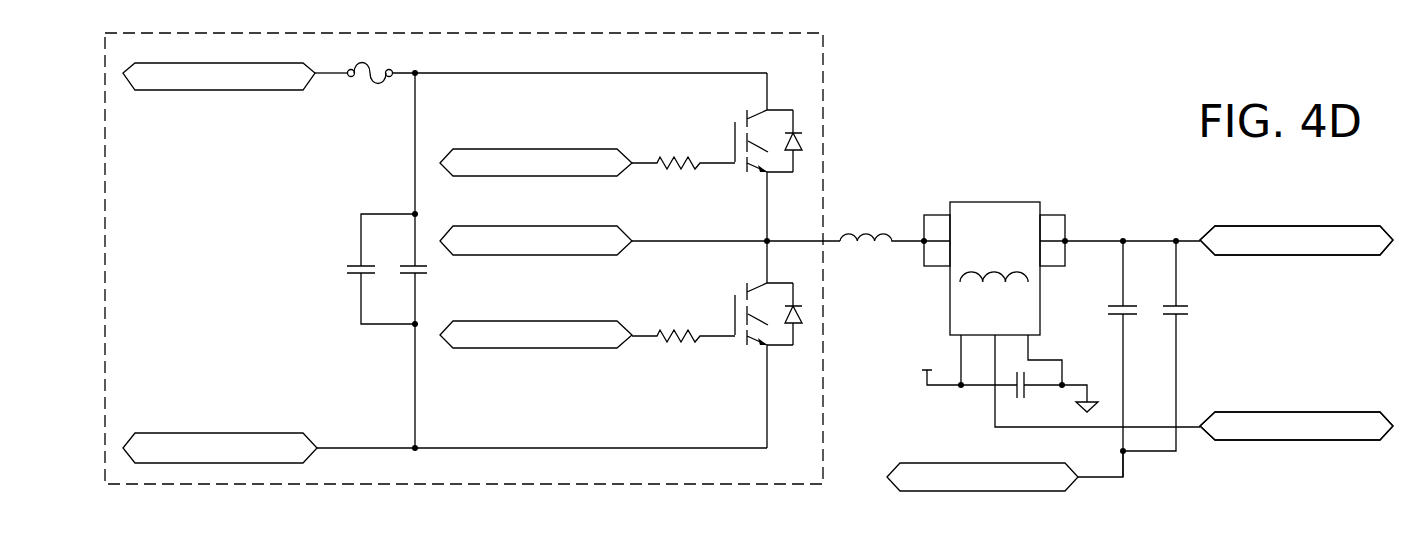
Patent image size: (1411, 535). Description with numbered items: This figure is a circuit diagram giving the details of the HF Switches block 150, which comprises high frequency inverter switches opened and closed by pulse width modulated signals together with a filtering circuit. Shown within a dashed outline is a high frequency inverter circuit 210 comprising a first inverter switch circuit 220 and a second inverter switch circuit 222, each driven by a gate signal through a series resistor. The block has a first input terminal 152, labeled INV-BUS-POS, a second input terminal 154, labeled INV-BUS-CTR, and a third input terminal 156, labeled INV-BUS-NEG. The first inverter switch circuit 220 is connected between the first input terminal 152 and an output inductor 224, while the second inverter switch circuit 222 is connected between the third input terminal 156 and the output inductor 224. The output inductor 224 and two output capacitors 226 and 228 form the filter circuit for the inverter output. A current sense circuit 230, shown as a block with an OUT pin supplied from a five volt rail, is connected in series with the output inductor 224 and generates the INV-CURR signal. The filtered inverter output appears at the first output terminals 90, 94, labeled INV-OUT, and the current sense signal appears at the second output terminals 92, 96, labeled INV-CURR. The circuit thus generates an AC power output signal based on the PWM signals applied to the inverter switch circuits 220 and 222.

The HF Switches block 150 is at (552, 456).
The first input terminal 152 is at (237, 91).
The second input terminal 154 is at (965, 491).
The third input terminal 156 is at (212, 433).
The high frequency inverter circuit 210 is at (836, 55).
The first inverter switch circuit 220 is at (813, 142).
The second inverter switch circuit 222 is at (812, 312).
The output inductor 224 is at (862, 232).
The output capacitor 226 is at (1130, 318).
The output capacitor 228 is at (1185, 305).
The current sense circuit 230 is at (1033, 188).
The first output terminal 90 is at (1242, 228).
The first output terminal 94 is at (1296, 240).
The second output terminal 92 is at (1283, 412).
The second output terminal 96 is at (1296, 426).